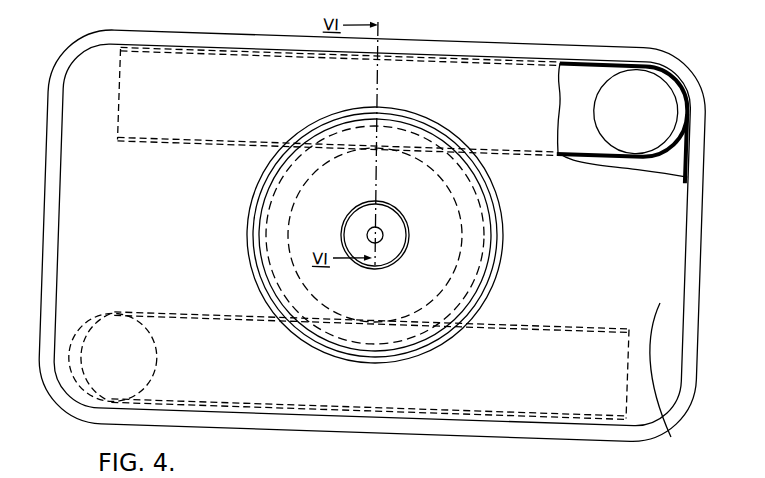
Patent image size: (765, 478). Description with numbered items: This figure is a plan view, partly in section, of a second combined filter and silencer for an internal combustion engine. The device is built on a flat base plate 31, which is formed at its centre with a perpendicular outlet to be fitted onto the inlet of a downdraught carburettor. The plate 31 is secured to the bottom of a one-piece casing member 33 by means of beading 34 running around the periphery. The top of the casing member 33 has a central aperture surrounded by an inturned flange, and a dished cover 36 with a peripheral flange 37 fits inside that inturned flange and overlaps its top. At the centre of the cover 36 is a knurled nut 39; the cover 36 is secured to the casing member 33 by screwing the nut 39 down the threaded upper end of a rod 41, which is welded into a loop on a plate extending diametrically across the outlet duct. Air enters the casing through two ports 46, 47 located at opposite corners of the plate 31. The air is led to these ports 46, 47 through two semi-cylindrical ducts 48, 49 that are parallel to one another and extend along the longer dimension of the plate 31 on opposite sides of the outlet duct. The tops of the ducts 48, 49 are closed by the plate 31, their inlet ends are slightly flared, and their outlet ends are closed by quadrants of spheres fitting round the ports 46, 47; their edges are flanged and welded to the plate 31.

The flat base plate 31 is at (675, 133).
The one-piece casing member 33 is at (672, 379).
The beading 34 is at (430, 46).
The dished cover 36 is at (439, 213).
The peripheral flange 37 is at (485, 171).
The knurled nut 39 is at (385, 218).
The rod 41 is at (368, 232).
The port 46 is at (591, 83).
The port 47 is at (157, 349).
The semi-cylindrical duct 48 is at (579, 56).
The semi-cylindrical duct 49 is at (557, 324).